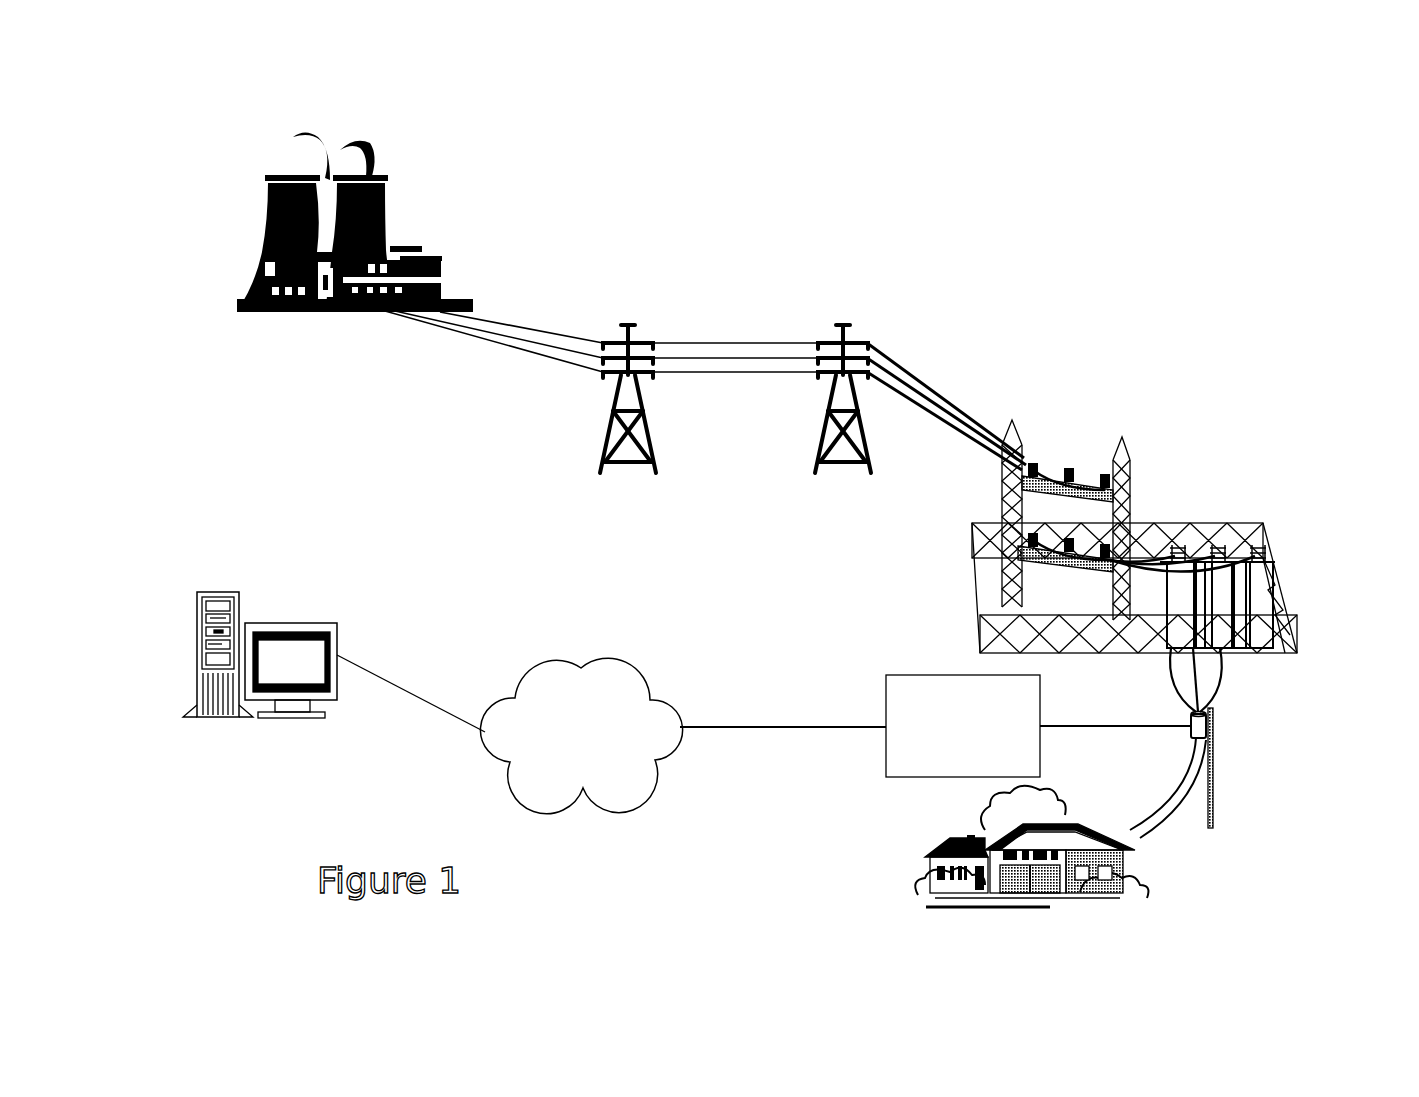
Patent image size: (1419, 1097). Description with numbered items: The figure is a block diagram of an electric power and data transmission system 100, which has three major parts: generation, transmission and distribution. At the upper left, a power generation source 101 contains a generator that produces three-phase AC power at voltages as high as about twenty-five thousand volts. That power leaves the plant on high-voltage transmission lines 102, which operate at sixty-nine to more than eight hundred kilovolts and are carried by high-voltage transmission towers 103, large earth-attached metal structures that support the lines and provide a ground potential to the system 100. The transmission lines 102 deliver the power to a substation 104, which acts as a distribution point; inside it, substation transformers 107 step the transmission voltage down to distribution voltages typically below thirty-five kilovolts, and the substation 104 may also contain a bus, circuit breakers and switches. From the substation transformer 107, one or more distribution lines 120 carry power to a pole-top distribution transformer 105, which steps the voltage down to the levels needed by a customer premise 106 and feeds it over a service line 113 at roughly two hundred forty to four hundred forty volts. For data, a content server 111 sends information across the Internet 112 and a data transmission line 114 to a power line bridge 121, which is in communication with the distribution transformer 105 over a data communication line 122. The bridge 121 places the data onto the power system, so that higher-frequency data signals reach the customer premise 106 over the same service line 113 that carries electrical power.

The electric power and data transmission system 100 is at (1200, 178).
The power generation source 101 is at (357, 193).
The high-voltage transmission lines 102 is at (878, 322).
The high-voltage transmission towers 103 is at (810, 459).
The substation 104 is at (1080, 536).
The distribution transformer 105 is at (1215, 729).
The customer premise 106 is at (980, 848).
The substation transformer 107 is at (1273, 569).
The content server 111 is at (334, 691).
The Internet 112 is at (581, 736).
The service line 113 is at (1160, 822).
The data transmission line 114 is at (783, 742).
The distribution line 120 is at (1219, 667).
The power line bridge 121 is at (963, 726).
The data communication line 122 is at (1115, 742).